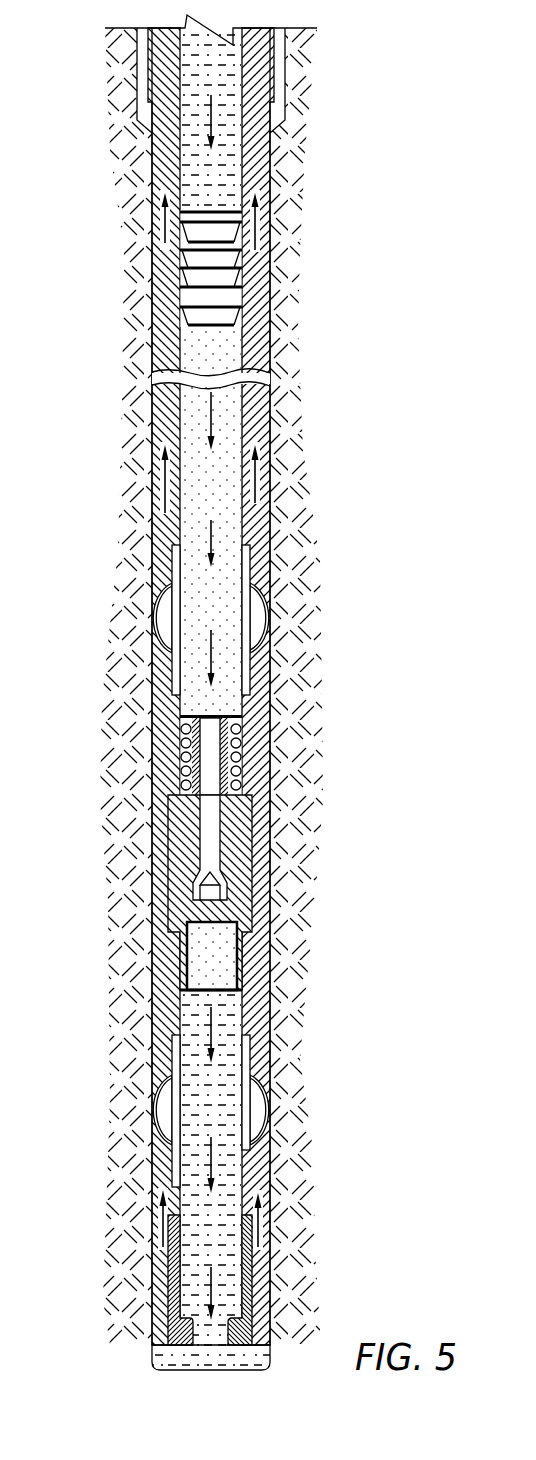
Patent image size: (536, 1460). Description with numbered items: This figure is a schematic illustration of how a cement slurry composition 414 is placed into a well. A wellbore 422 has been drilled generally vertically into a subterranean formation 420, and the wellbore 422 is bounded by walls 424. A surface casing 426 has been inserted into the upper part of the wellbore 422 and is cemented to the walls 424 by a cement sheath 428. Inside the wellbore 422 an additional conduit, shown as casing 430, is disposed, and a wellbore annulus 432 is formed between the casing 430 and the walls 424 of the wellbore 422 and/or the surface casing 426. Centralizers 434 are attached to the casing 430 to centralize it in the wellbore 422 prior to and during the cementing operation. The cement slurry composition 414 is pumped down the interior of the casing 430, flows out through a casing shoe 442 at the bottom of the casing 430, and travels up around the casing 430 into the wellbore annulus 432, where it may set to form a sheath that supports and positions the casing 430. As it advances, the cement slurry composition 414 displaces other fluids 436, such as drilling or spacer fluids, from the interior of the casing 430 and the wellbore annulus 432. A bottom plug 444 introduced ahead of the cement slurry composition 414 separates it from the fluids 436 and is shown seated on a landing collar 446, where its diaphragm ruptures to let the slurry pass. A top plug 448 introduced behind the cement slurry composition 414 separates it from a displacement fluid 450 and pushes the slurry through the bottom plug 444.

The cement slurry composition 414 is at (210, 410).
The subterranean formation 420 is at (318, 754).
The wellbore 422 is at (283, 557).
The walls 424 is at (262, 335).
The surface casing 426 is at (272, 64).
The cement sheath 428 is at (290, 84).
The casing 430 is at (260, 422).
The wellbore annulus 432 is at (165, 508).
The centralizers 434 is at (153, 1097).
The fluids 436 is at (210, 1027).
The casing shoe 442 is at (153, 1262).
The bottom plug 444 is at (190, 732).
The landing collar 446 is at (168, 807).
The top plug 448 is at (182, 258).
The displacement fluid 450 is at (210, 117).